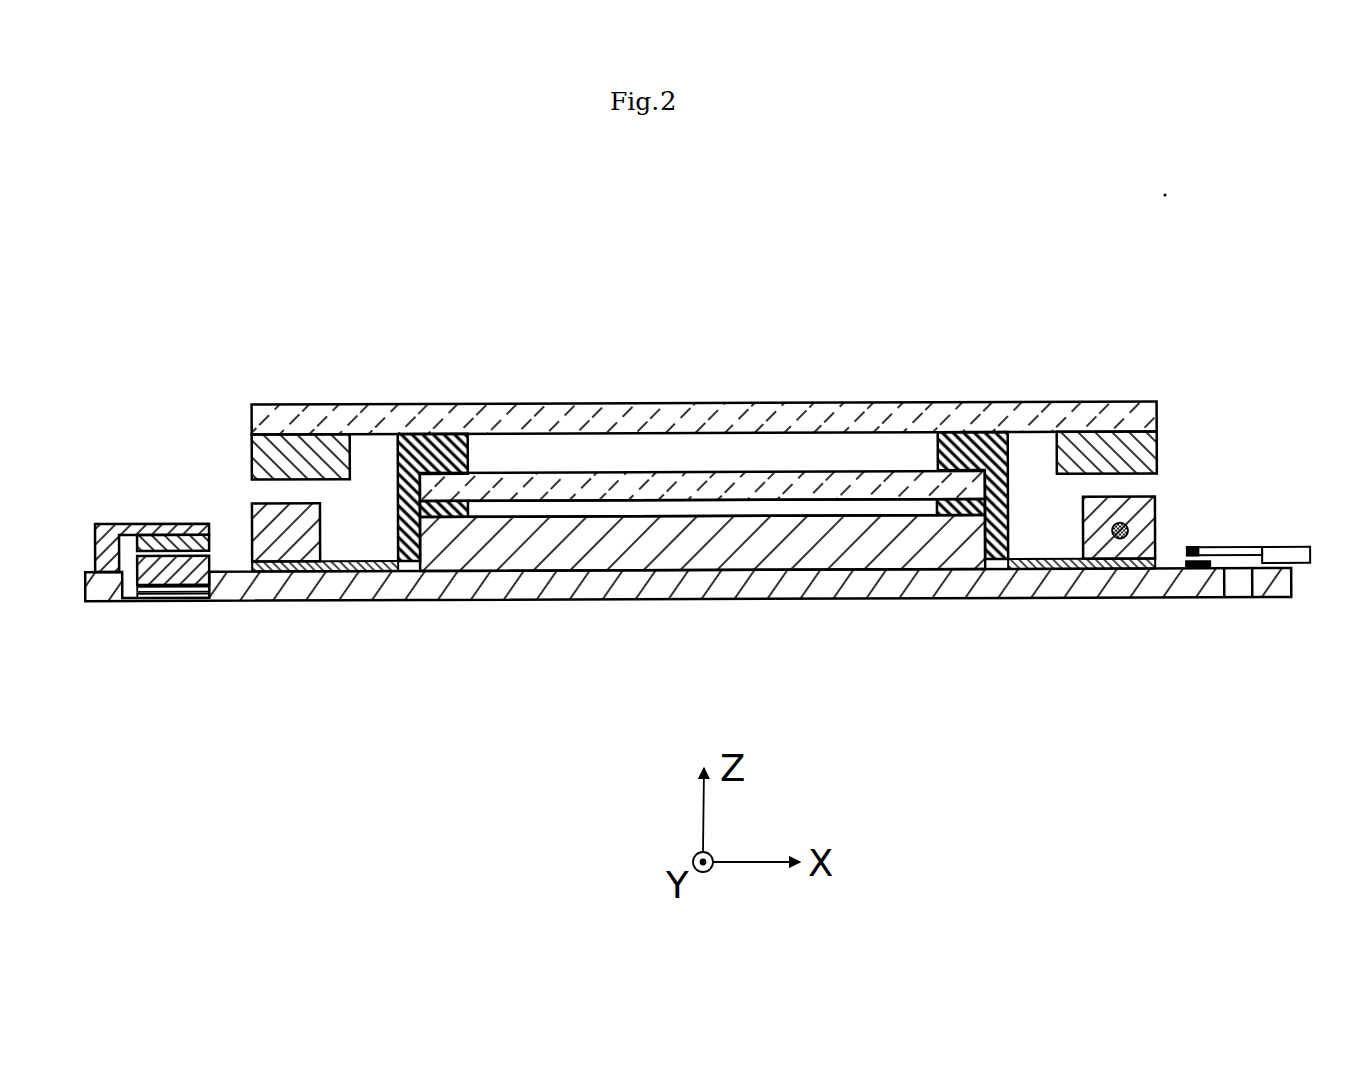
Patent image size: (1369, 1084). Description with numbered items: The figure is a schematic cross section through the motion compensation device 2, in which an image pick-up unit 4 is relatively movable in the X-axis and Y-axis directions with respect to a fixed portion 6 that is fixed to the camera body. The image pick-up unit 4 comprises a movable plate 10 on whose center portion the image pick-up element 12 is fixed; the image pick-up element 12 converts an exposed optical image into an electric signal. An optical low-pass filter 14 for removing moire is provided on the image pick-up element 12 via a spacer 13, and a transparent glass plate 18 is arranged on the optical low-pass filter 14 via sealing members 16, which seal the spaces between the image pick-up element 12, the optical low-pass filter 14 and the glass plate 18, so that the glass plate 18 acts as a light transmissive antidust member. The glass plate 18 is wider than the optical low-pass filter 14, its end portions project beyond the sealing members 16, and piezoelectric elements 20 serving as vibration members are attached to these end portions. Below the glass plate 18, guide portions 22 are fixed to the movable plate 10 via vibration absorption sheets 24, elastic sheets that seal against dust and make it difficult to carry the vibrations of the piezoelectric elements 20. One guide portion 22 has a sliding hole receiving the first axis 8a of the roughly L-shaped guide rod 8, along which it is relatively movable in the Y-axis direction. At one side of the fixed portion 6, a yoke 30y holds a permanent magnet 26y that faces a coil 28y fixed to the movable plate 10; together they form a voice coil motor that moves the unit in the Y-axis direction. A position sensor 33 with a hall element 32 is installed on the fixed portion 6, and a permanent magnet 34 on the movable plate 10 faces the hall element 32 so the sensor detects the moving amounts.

The motion compensation device 2 is at (853, 345).
The image pick-up unit 4 is at (1076, 400).
The fixed portion 6 is at (108, 597).
The guide rod 8 is at (1127, 525).
The first axis 8a is at (1114, 542).
The movable plate 10 is at (628, 585).
The image pick-up element 12 is at (806, 540).
The spacer 13 is at (443, 512).
The optical low-pass filter 14 is at (624, 487).
The sealing member 16 is at (440, 455).
The glass plate 18 is at (732, 425).
The piezoelectric element 20 is at (313, 455).
The guide portion 22 is at (287, 535).
The vibration absorption sheet 24 is at (342, 568).
The permanent magnet 26y is at (167, 530).
The coil 28y is at (178, 596).
The yoke 30y is at (118, 522).
The hall element 32 is at (1203, 548).
The position sensor 33 is at (1285, 549).
The permanent magnet 34 is at (1190, 568).